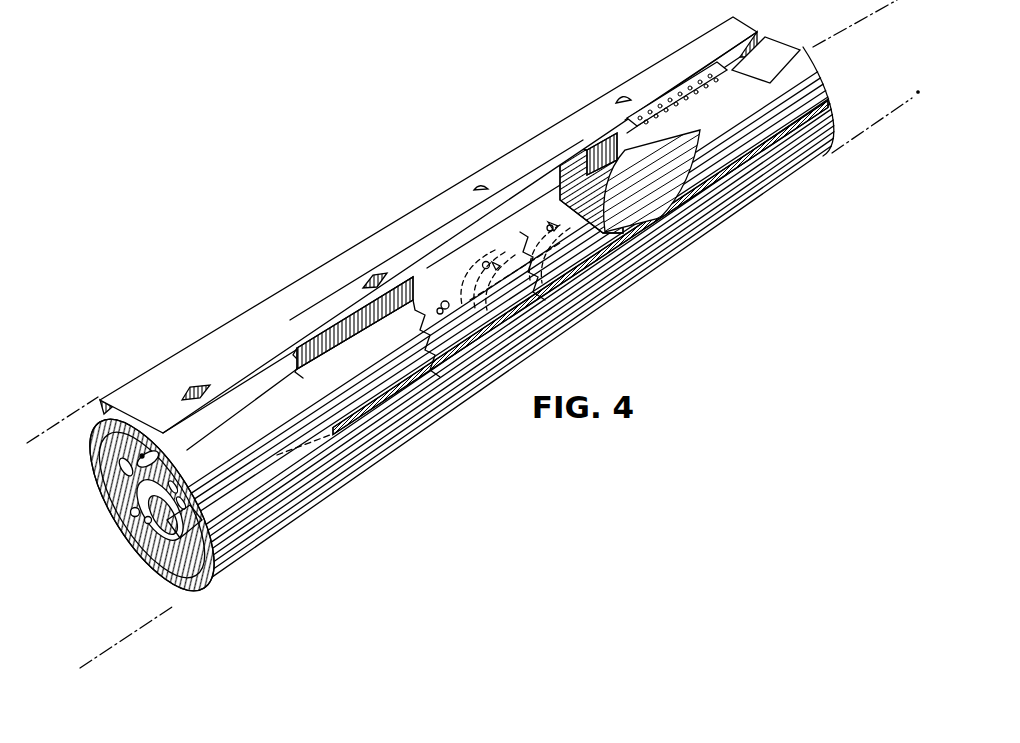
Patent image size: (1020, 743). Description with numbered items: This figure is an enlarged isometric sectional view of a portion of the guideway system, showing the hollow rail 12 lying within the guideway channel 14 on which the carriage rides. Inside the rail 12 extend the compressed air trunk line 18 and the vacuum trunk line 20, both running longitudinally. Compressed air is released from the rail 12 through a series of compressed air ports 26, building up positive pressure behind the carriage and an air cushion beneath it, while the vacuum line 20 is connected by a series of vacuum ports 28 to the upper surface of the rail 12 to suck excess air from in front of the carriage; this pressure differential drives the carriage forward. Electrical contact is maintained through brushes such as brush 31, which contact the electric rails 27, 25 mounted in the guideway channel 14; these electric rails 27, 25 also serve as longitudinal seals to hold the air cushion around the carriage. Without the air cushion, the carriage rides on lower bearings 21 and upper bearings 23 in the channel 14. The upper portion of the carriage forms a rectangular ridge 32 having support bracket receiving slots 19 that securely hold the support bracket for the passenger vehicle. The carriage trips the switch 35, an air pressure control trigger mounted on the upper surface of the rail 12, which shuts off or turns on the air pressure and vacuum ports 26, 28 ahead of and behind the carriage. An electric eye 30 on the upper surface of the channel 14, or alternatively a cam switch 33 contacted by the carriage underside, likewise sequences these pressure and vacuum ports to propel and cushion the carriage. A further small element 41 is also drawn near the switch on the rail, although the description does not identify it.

The rail 12 is at (205, 508).
The guideway channel 14 is at (165, 578).
The compressed air trunk line 18 is at (147, 524).
The support bracket receiving slots 19 is at (188, 392).
The vacuum trunk line 20 is at (133, 516).
The lower bearings 21 is at (124, 494).
The upper bearings 23 is at (693, 100).
The electric rail 25 is at (137, 425).
The compressed air ports 26 is at (497, 263).
The electric rail 27 is at (133, 518).
The vacuum ports 28 is at (484, 263).
The electric eye 30 is at (623, 98).
The brush 31 is at (197, 516).
The rectangular ridge 32 is at (243, 368).
The cam switch 33 is at (441, 302).
The air pressure control trigger 35 is at (487, 260).
The clip 41 is at (480, 183).